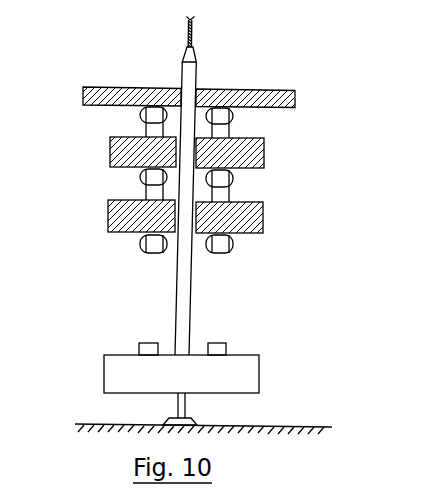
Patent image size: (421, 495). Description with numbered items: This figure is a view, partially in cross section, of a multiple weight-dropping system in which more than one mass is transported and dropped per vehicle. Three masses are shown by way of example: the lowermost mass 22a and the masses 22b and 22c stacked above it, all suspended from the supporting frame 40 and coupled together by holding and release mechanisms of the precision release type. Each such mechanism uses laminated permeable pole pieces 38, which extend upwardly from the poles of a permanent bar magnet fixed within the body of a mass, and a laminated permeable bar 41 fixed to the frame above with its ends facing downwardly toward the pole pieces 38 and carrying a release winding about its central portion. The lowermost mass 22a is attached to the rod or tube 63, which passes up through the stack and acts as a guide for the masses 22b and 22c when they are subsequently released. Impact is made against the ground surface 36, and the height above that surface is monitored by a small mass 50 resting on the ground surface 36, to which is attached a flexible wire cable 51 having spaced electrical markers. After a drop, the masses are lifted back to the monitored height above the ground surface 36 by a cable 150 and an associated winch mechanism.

The cable 150 is at (229, 32).
The supporting frame 40 is at (157, 96).
The laminated permeable bar 41 is at (185, 186).
The laminated permeable pole pieces 38 is at (160, 238).
The mass 22c is at (224, 152).
The mass 22b is at (224, 216).
The lowermost mass 22a is at (220, 374).
The rod or tube 63 is at (230, 201).
The flexible wire cable 51 is at (213, 405).
The small mass 50 is at (157, 412).
The ground surface 36 is at (203, 417).